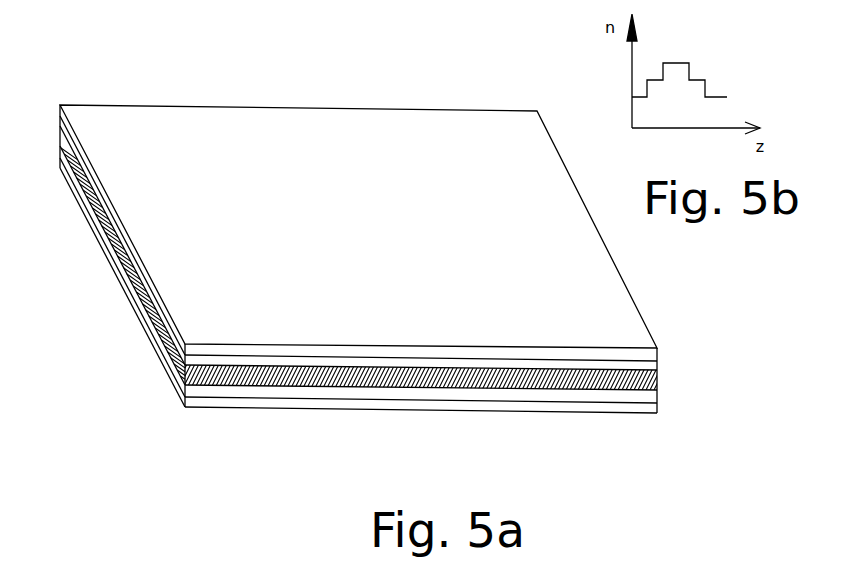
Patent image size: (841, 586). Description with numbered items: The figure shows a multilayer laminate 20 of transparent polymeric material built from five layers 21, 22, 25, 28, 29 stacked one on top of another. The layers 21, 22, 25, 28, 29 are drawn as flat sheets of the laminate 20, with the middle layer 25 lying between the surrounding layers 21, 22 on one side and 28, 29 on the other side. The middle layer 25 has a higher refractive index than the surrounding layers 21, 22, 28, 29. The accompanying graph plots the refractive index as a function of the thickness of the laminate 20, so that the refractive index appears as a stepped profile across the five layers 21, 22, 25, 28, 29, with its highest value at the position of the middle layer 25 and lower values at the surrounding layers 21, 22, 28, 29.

The planar waveguide structure 20 is at (97, 313).
The layer 21 is at (289, 347).
The layer 22 is at (337, 362).
The middle layer 25 is at (405, 370).
The layer 28 is at (473, 395).
The layer 29 is at (522, 408).